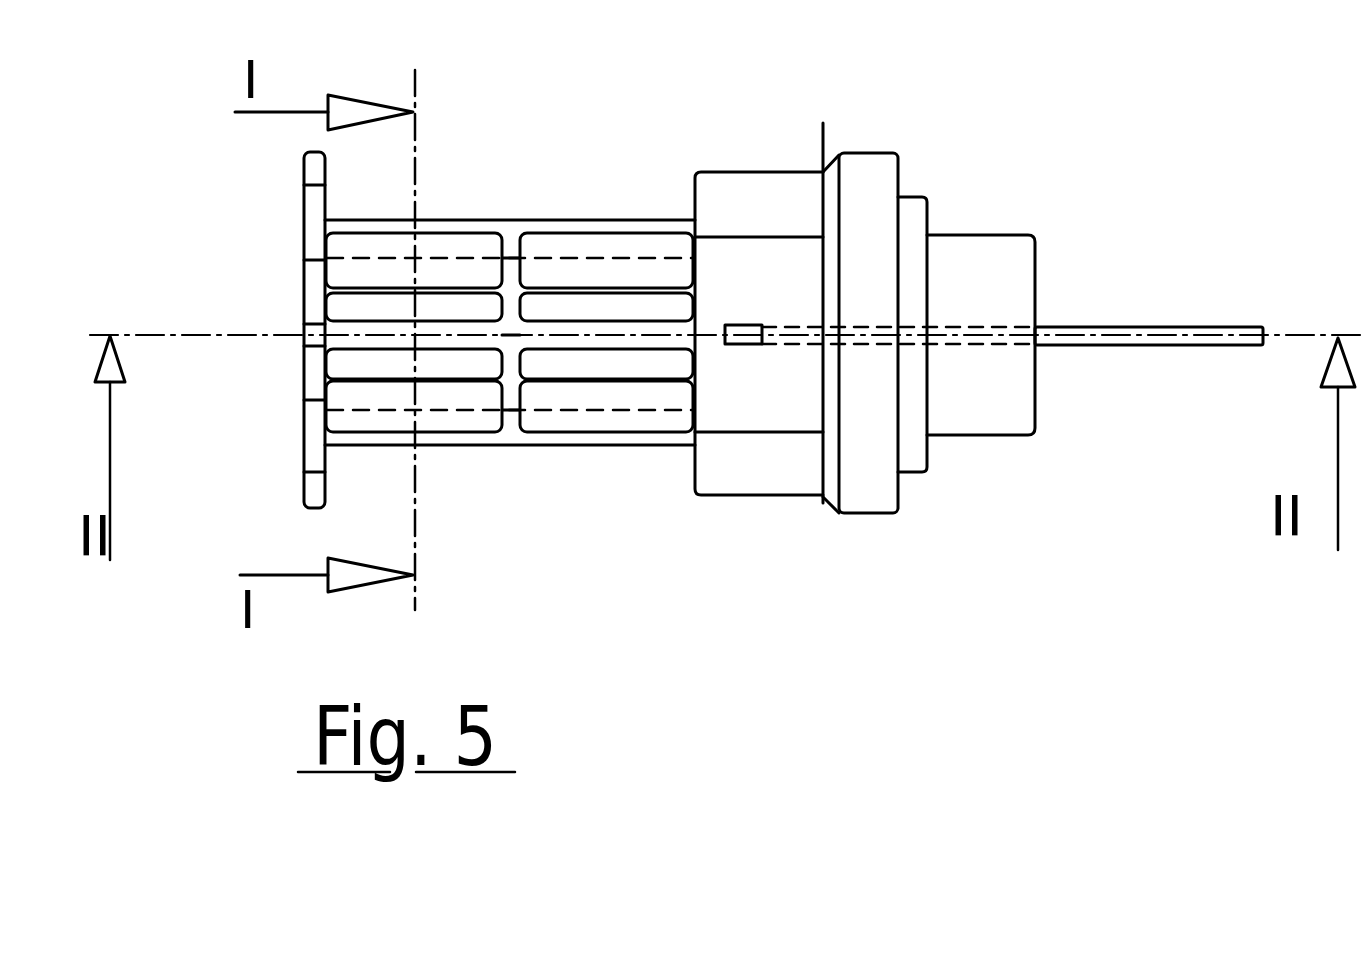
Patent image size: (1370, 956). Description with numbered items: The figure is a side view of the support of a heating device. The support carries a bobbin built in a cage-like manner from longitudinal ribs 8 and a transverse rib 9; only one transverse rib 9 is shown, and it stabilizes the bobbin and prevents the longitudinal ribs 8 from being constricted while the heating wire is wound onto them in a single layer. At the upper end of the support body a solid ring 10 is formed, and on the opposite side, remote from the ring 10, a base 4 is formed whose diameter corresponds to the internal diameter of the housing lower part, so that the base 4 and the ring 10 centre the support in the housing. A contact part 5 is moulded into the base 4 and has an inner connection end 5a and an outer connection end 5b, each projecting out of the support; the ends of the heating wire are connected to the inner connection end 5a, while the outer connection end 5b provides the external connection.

The base 4 is at (763, 405).
The contact part 5 is at (1080, 357).
The inner connection end 5a is at (743, 338).
The outer connection end 5b is at (1143, 335).
The longitudinal ribs 8 is at (354, 436).
The transverse rib 9 is at (508, 272).
The ring 10 is at (318, 412).